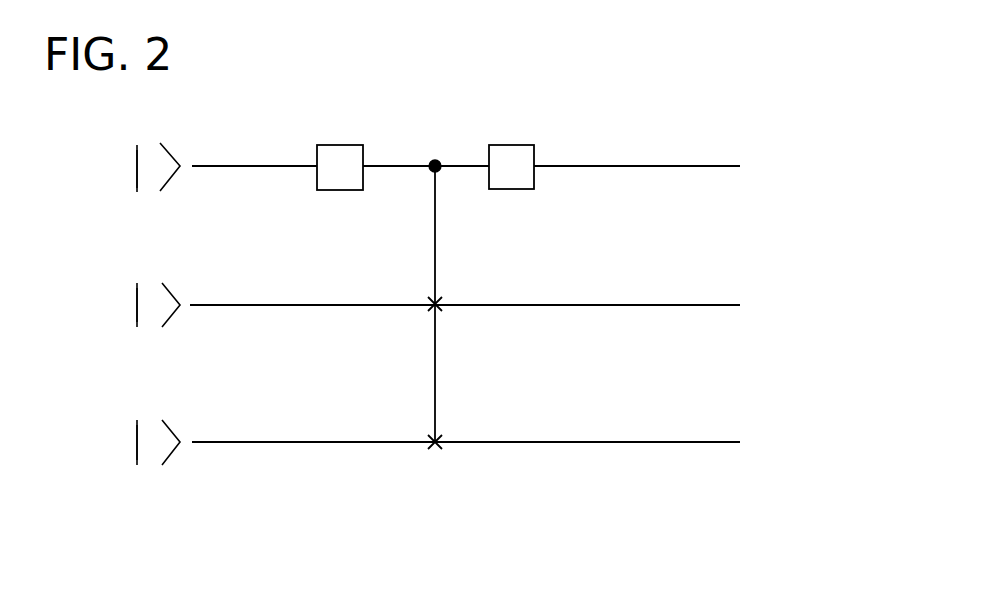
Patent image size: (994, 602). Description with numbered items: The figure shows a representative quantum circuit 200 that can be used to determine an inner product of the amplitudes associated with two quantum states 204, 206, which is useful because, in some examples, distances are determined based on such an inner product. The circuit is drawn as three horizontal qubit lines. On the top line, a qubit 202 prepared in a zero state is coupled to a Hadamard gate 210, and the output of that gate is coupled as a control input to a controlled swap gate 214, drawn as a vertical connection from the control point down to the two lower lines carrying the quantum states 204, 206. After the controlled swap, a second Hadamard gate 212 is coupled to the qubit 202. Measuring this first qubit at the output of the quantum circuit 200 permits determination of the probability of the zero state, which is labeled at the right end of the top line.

The quantum circuit 200 is at (658, 133).
The qubit 202 is at (122, 195).
The quantum state 204 is at (117, 318).
The quantum state 206 is at (118, 462).
The Hadamard gate 210 is at (340, 148).
The second Hadamard gate 212 is at (503, 144).
The controlled swap gate 214 is at (434, 469).